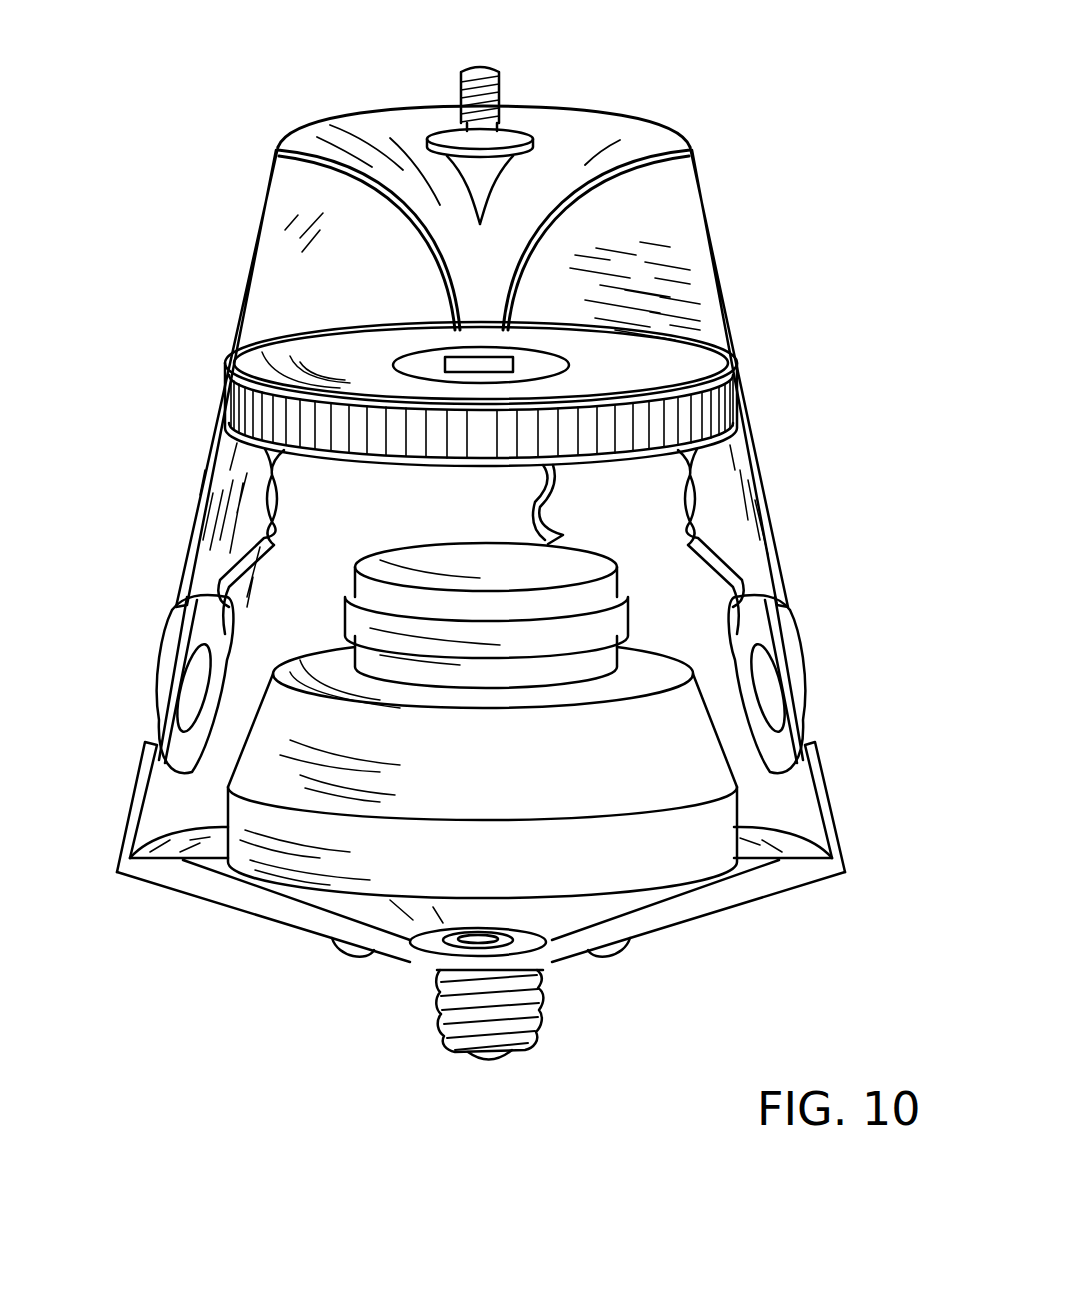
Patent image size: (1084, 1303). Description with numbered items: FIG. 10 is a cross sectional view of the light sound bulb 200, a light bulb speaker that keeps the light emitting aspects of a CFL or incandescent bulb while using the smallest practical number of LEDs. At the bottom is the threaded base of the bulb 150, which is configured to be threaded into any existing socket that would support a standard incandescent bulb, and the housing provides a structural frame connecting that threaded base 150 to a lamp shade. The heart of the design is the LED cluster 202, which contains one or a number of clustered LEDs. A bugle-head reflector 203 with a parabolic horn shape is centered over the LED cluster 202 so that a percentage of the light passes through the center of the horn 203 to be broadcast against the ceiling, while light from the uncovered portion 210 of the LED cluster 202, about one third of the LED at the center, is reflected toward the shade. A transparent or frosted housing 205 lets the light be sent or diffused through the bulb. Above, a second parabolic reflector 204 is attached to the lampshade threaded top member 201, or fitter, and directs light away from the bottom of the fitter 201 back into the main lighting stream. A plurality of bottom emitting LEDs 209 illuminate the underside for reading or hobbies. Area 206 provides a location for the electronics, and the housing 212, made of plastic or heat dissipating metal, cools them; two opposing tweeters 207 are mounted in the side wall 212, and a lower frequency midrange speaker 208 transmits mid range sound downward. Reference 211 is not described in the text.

The light sound bulb 200 is at (777, 284).
The lampshade threaded top member 201 is at (502, 80).
The LED cluster 202 is at (435, 362).
The bugle-head reflector 203 is at (353, 175).
The second parabolic reflector 204 is at (490, 193).
The transparent or frosted housing 205 is at (703, 195).
The area for electronics 206 is at (710, 437).
The tweeters 207 is at (805, 683).
The lower frequency midrange speaker 208 is at (735, 812).
The bottom emitting LEDs 209 is at (342, 947).
The uncovered portion of the LED cluster 210 is at (490, 323).
The housing body 211 is at (712, 703).
The housing 212 is at (198, 490).
The threaded base of the bulb 150 is at (437, 1013).